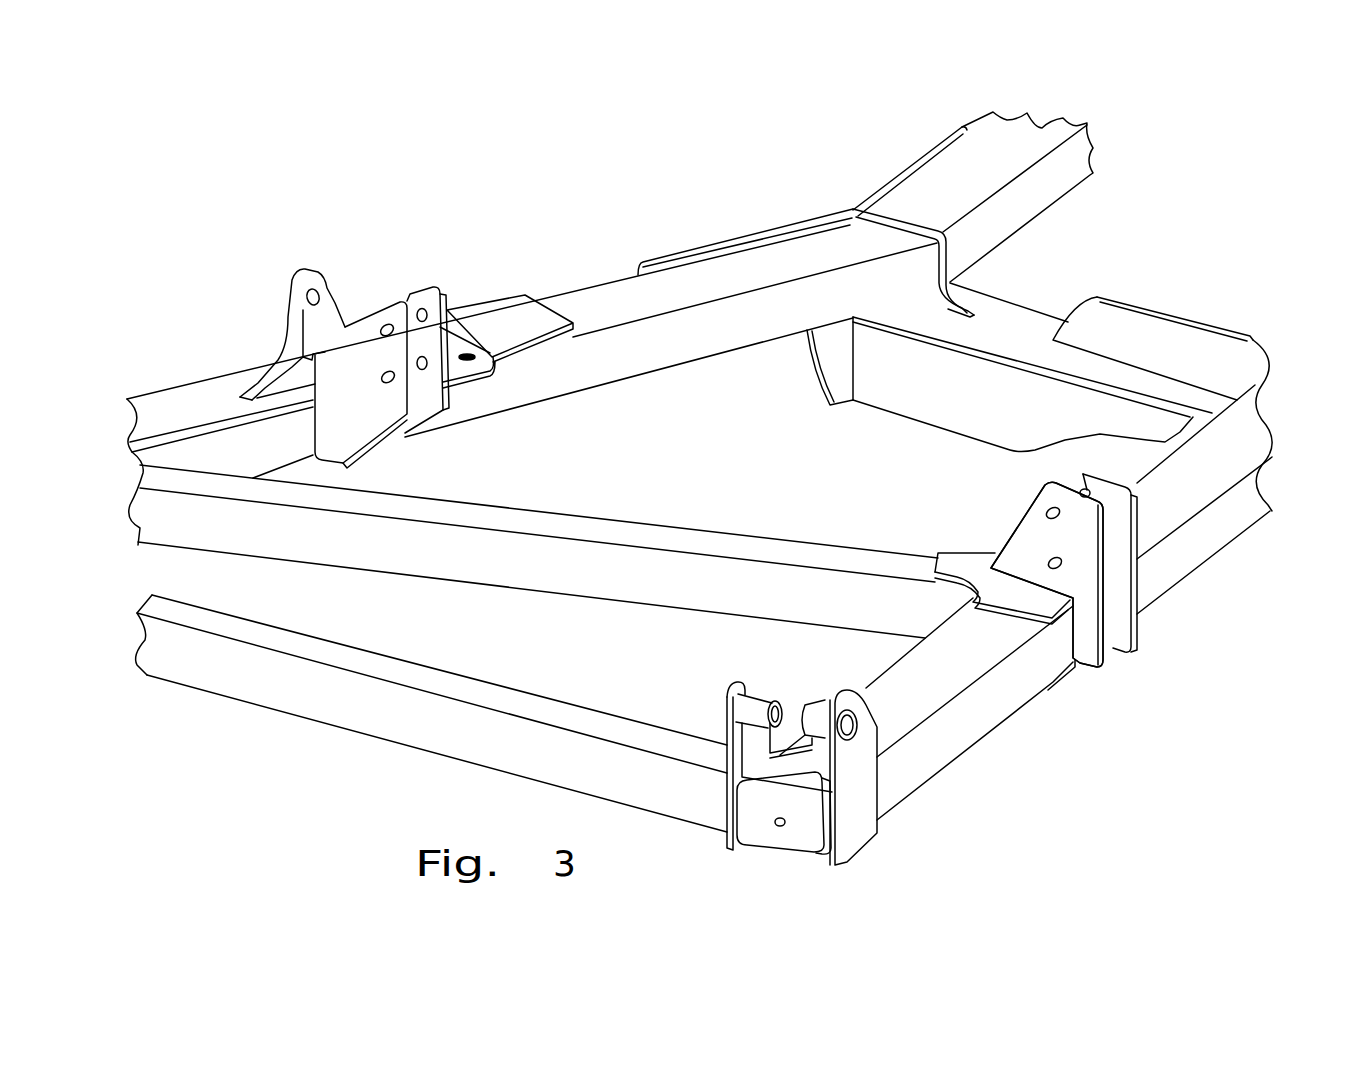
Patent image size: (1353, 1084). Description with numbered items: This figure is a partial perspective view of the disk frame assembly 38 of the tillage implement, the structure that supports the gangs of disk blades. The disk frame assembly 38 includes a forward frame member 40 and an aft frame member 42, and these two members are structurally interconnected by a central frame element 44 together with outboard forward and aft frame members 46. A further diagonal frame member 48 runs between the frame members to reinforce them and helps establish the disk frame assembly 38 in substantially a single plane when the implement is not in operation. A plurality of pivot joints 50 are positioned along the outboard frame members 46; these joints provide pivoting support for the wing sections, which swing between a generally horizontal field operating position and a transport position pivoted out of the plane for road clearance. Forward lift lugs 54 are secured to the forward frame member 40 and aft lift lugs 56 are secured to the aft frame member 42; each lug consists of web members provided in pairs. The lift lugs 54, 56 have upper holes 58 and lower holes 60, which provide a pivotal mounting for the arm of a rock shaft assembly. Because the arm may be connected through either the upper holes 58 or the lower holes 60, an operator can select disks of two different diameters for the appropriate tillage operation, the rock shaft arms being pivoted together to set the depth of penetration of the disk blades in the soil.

The disk frame assembly 38 is at (837, 180).
The forward frame member 40 is at (958, 732).
The aft frame member 42 is at (614, 290).
The central frame element 44 is at (987, 343).
The outboard forward and aft frame members 46 is at (416, 738).
The diagonal frame member 48 is at (572, 526).
The pivot joints 50 is at (730, 698).
The forward lift lugs 54 is at (1088, 592).
The aft lift lugs 56 is at (335, 337).
The upper holes 58 is at (383, 328).
The lower holes 60 is at (382, 384).